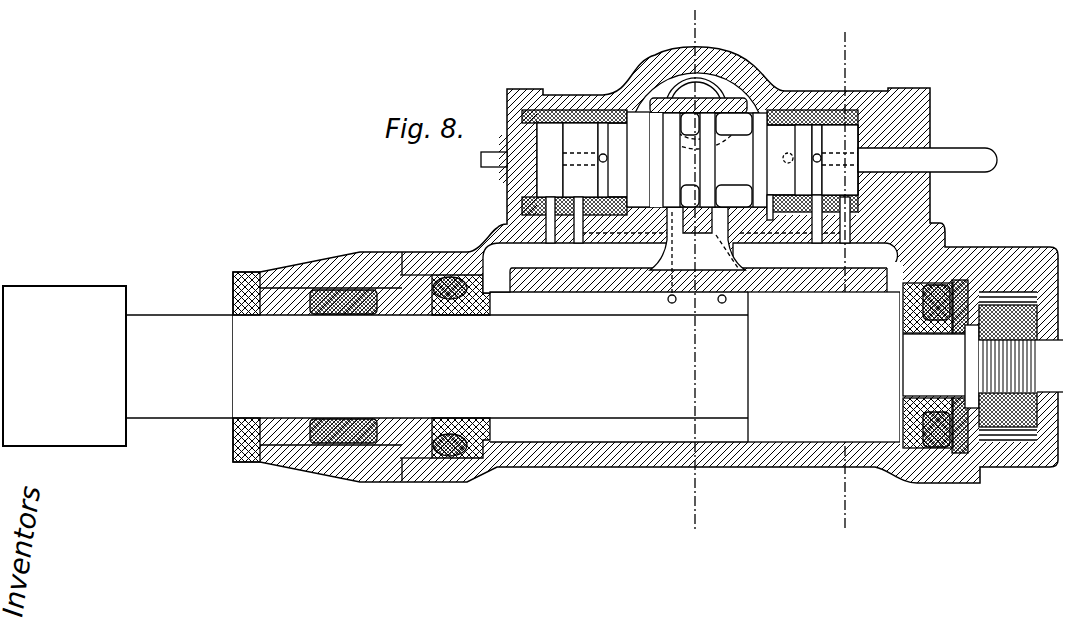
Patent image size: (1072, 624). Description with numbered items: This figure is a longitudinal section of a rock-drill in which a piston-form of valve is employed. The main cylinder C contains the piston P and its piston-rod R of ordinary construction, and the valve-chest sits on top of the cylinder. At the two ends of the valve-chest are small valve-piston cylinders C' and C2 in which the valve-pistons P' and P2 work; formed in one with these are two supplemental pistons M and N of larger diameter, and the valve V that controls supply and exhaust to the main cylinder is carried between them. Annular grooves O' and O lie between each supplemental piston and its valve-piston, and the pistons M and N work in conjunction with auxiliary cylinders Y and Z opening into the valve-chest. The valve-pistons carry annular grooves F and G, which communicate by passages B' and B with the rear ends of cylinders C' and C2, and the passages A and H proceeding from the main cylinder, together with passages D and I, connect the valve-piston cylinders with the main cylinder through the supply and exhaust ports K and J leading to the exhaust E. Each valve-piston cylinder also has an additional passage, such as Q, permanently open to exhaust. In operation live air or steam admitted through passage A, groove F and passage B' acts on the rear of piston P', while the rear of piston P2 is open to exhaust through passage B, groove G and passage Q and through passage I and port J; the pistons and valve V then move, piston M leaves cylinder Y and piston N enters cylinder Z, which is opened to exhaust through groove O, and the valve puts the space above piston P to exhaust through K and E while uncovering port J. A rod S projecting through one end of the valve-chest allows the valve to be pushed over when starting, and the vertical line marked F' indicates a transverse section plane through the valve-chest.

The passage A is at (576, 224).
The passage B is at (840, 160).
The passage B' is at (580, 160).
The cylinder C is at (645, 265).
The valve-piston cylinder C' is at (550, 160).
The valve-piston cylinder C2 is at (864, 137).
The passage D is at (550, 198).
The exhaust E is at (697, 241).
The annular groove F is at (589, 160).
The center line F' is at (694, 283).
The annular groove G is at (816, 176).
The passage H is at (790, 208).
The passage I is at (850, 258).
The port J is at (575, 268).
The port K is at (818, 268).
The supplemental piston M is at (652, 160).
The supplemental piston N is at (752, 152).
The annular groove O is at (796, 121).
The annular groove O' is at (676, 75).
The piston P is at (824, 367).
The valve-piston P' is at (574, 142).
The valve-piston P2 is at (845, 122).
The passage Q is at (787, 153).
The piston-rod R is at (375, 366).
The rod S is at (927, 160).
The valve V is at (715, 160).
The auxiliary cylinder Y is at (627, 112).
The auxiliary cylinder Z is at (760, 110).